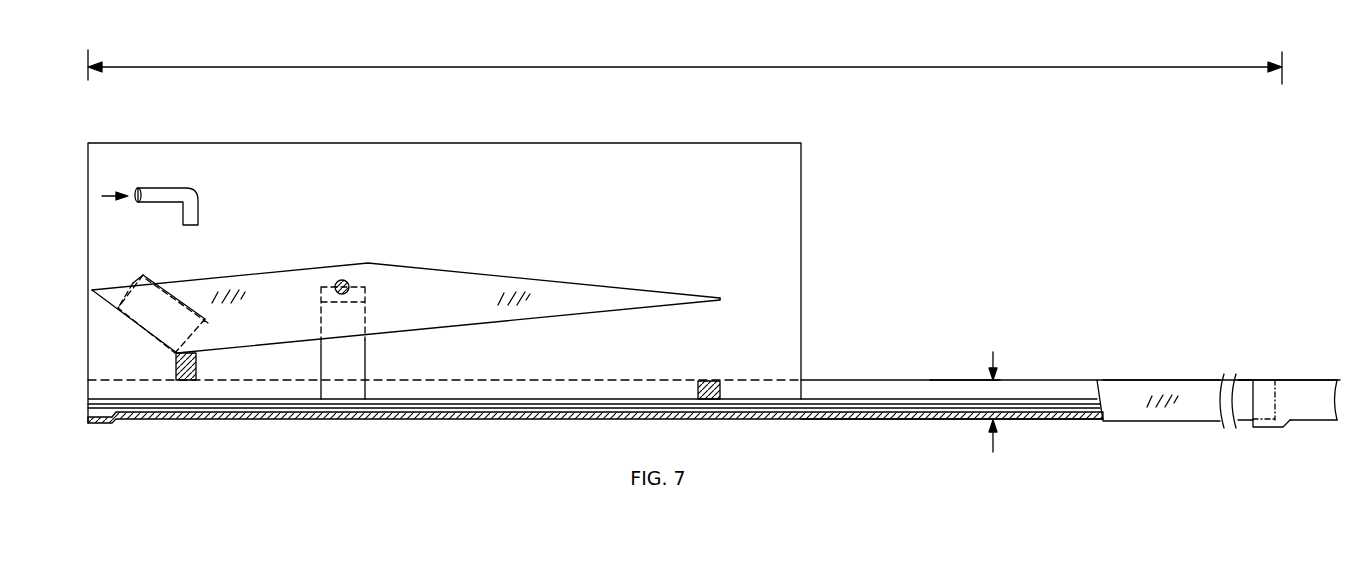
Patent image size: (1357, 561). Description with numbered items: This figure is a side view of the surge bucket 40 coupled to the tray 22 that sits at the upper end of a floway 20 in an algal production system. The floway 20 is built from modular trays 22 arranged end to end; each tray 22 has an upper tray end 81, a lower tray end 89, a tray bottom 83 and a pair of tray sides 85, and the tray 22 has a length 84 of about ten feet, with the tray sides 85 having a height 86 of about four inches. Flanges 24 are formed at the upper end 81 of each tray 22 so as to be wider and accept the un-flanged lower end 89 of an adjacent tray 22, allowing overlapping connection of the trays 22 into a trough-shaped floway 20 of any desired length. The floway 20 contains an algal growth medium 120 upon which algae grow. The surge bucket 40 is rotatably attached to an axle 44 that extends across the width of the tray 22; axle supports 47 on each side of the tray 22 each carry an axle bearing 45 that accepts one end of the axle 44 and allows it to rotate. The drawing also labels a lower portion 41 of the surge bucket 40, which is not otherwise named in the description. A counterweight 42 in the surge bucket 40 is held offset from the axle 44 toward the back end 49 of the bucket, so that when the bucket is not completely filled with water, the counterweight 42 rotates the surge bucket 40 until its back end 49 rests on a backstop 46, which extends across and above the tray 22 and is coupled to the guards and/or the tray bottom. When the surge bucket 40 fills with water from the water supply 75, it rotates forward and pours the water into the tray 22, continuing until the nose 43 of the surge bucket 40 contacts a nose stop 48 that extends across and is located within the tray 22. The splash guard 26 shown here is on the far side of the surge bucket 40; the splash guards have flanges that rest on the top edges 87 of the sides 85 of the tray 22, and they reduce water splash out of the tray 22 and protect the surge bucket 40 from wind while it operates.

The length 84 is at (720, 67).
The splash guard 26 is at (117, 143).
The water supply 75 is at (112, 193).
The counterweight 42 is at (132, 297).
The axle bearing 45 is at (327, 287).
The axle 44 is at (345, 280).
The surge bucket 40 is at (497, 276).
The lower surface 41 is at (562, 318).
The nose 43 is at (722, 299).
The back end 49 is at (118, 308).
The backstop 46 is at (173, 360).
The axle support 47 is at (368, 362).
The nose stop 48 is at (712, 381).
The algal growth medium 120 is at (88, 405).
The upper tray end 81 is at (130, 419).
The tray bottom 83 is at (847, 412).
The tray side 85 is at (907, 395).
The top edge 87 is at (960, 380).
The height 86 is at (993, 353).
The floway 20 is at (1173, 380).
The tray 22 is at (1317, 380).
The lower tray end 89 is at (1247, 426).
The flange 24 is at (1280, 428).